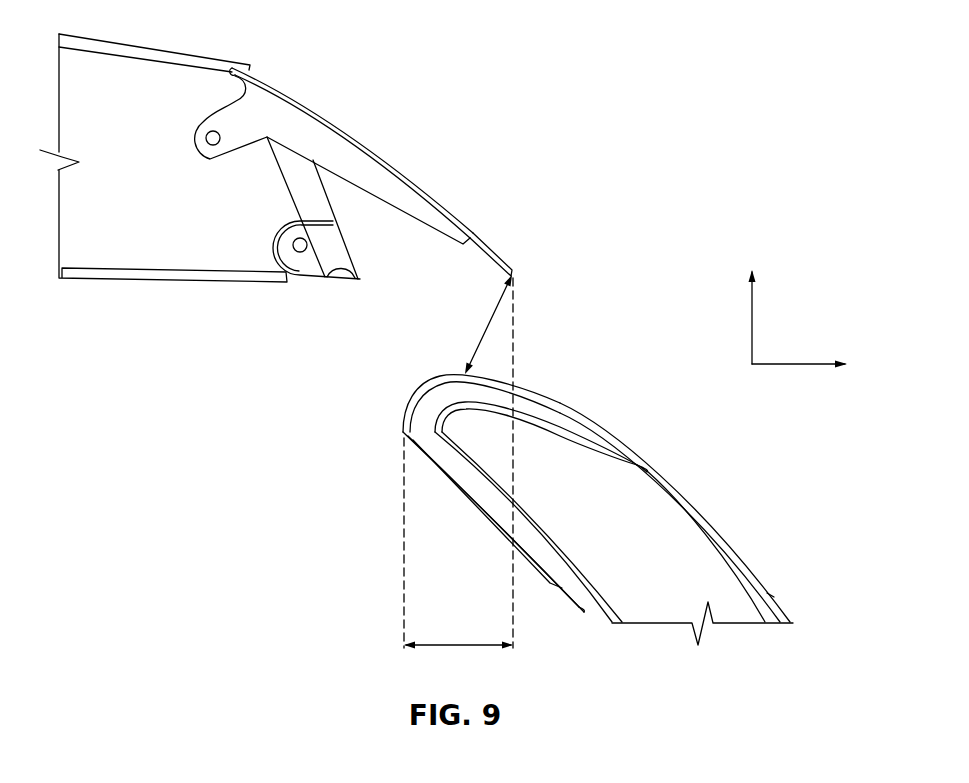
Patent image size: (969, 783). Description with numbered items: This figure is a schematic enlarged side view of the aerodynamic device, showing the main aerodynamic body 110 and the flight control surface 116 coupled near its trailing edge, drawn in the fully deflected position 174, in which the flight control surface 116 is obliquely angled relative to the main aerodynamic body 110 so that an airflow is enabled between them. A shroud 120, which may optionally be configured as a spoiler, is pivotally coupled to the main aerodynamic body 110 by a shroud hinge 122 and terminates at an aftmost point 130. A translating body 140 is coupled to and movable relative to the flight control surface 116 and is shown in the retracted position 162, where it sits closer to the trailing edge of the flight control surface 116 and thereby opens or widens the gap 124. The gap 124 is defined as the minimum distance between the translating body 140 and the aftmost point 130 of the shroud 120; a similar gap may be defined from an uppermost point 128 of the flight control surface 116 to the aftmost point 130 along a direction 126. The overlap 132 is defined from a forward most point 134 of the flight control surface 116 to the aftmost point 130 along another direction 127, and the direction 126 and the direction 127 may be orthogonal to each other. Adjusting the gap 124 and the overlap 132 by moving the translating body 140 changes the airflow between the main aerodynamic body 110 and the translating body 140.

The main aerodynamic body 110 is at (143, 36).
The shroud 120 is at (357, 139).
The shroud hinge 122 is at (213, 140).
The aftmost point 130 is at (508, 265).
The gap 124 is at (487, 327).
The uppermost point 128 is at (440, 376).
The forward most point 134 is at (403, 418).
The flight control surface 116 is at (733, 524).
The fully deflected position 174 is at (779, 594).
The translating body 140 is at (577, 511).
The retracted position 162 is at (593, 431).
The overlap 132 is at (461, 641).
The direction 126 is at (753, 317).
The direction 127 is at (795, 367).